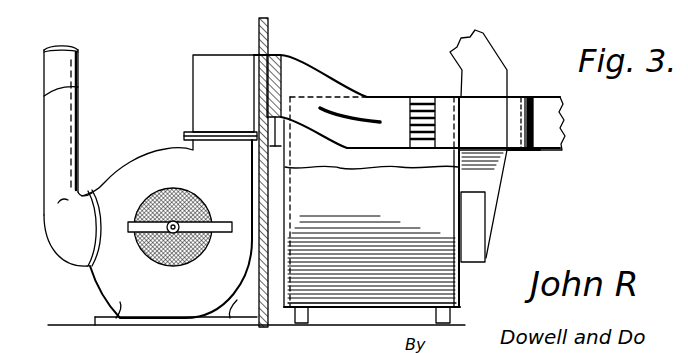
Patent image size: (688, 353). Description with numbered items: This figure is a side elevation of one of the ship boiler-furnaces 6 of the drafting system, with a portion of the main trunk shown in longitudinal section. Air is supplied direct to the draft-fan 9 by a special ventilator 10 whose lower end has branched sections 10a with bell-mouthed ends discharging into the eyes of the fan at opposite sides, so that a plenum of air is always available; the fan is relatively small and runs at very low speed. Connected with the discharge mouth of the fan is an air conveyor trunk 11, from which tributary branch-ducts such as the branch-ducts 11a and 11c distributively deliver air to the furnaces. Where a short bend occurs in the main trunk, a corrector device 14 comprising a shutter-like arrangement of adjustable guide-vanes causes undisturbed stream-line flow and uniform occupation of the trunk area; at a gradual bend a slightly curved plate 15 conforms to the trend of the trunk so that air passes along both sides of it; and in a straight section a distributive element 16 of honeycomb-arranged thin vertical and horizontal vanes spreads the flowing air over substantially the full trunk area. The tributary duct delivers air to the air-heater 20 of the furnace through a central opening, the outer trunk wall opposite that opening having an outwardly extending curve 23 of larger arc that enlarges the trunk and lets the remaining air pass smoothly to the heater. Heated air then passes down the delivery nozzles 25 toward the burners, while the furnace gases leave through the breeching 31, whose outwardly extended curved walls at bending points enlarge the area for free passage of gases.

The ship boiler-furnace 6 is at (445, 273).
The draft-fan 9 is at (134, 162).
The special ventilator 10 is at (80, 66).
The branched section of ventilator 10a is at (80, 120).
The air conveyor trunk 11 is at (193, 80).
The branch-duct 11a is at (517, 152).
The branch-duct 11c is at (553, 149).
The corrector device 14 is at (281, 82).
The curved plate 15 is at (362, 117).
The distributive element 16 is at (420, 148).
The air-heater 20 is at (497, 102).
The outwardly extending curve of trunk wall 23 is at (533, 118).
The delivery nozzle 25 is at (486, 222).
The breeching 31 is at (491, 53).